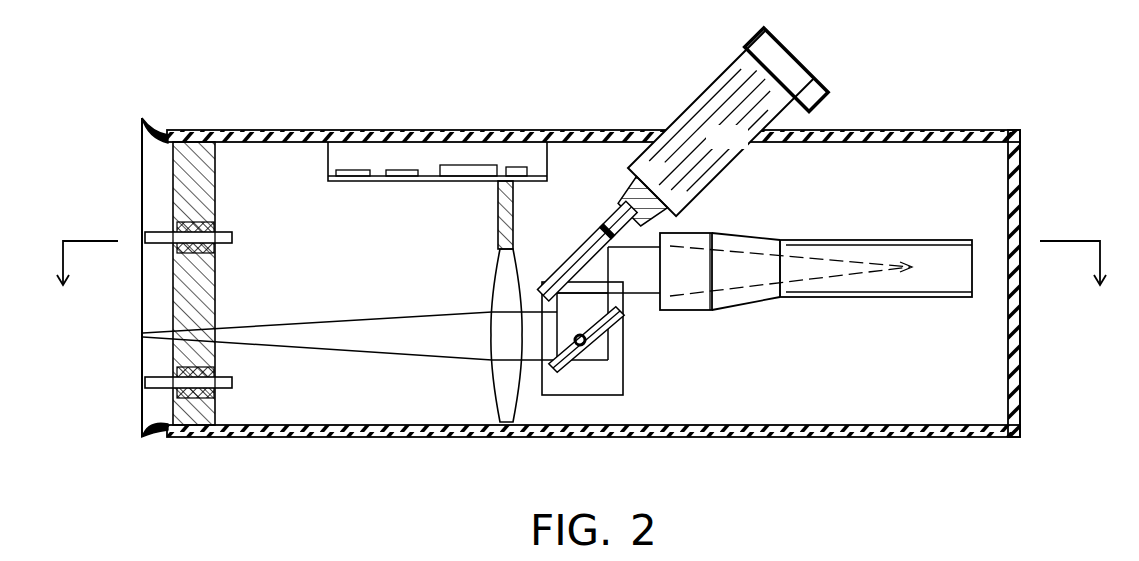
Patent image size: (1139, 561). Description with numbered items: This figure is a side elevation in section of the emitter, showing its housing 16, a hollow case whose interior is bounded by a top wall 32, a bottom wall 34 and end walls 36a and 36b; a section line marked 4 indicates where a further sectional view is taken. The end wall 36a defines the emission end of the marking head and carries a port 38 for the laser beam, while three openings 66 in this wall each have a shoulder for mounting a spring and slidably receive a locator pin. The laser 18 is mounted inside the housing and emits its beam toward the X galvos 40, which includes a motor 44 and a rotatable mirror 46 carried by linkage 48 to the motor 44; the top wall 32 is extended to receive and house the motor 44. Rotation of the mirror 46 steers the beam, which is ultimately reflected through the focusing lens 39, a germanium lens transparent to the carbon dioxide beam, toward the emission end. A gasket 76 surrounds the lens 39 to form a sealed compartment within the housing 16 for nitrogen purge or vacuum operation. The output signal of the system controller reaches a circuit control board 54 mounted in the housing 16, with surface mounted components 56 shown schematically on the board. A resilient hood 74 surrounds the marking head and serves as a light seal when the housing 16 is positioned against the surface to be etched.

The section line 4- 4 is at (581, 280).
The housing 16 is at (882, 118).
The laser 18 is at (957, 281).
The top wall 32 is at (273, 130).
The bottom wall 34 is at (760, 423).
The end wall 36a is at (217, 158).
The end wall 36b is at (1022, 168).
The port 38 is at (175, 352).
The lens 39 is at (507, 398).
The X galvos 40 is at (745, 148).
The motor 44 is at (593, 383).
The rotatable mirror 46 is at (556, 278).
The linkage 48 is at (640, 218).
The circuit control board 54 is at (532, 175).
The surface mounted components 56 is at (410, 170).
The openings 66 is at (215, 278).
The resilient hood 74 is at (148, 437).
The gasket 76 is at (498, 213).